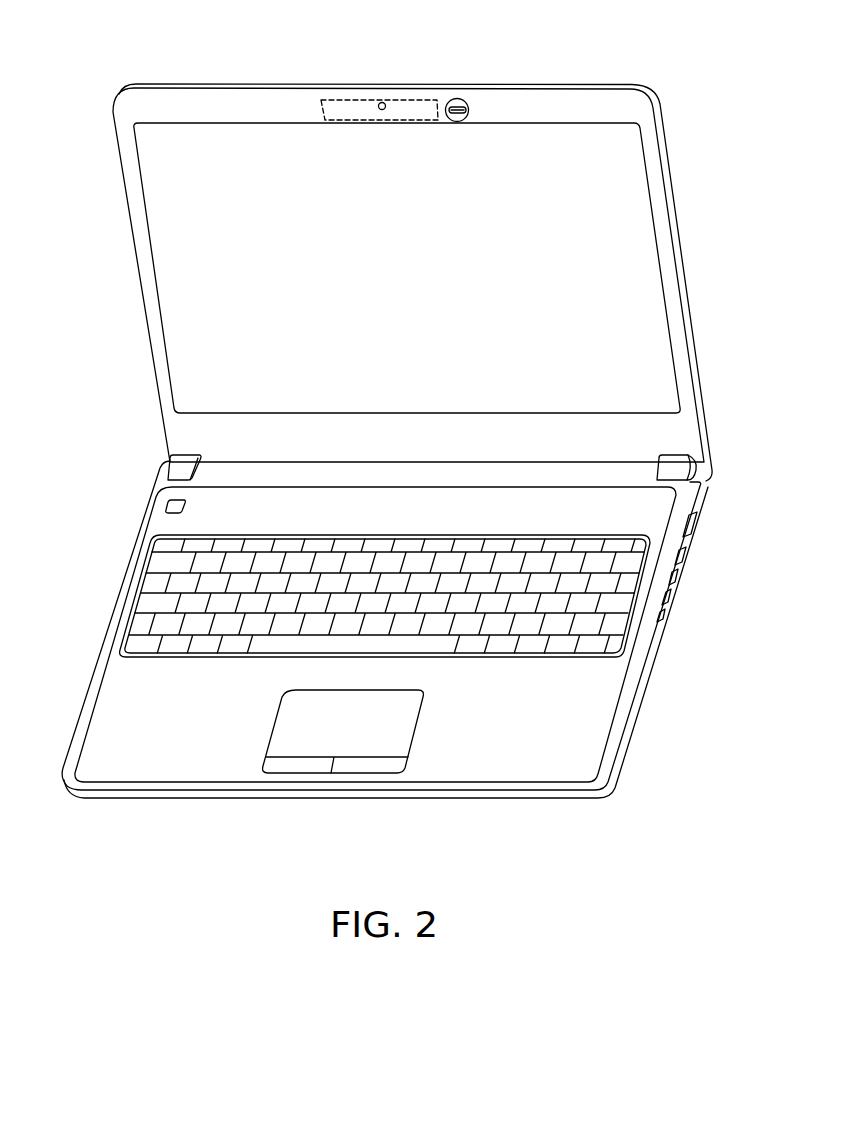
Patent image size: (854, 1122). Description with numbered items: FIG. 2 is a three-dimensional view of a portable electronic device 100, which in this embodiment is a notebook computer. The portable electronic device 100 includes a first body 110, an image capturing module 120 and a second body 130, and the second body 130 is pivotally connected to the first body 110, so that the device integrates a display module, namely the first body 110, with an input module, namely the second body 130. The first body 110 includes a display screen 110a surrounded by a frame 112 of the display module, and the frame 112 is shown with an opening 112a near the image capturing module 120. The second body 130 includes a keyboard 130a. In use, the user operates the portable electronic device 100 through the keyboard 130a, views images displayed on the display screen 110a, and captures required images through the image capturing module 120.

The portable electronic device 100 is at (402, 441).
The first body 110 is at (424, 247).
The display screen 110a is at (588, 173).
The frame (bezel) of display module 112 is at (630, 112).
The opening in frame 112a is at (378, 104).
The image capturing module 120 is at (417, 99).
The second body 130 is at (402, 626).
The keyboard 130a is at (608, 627).